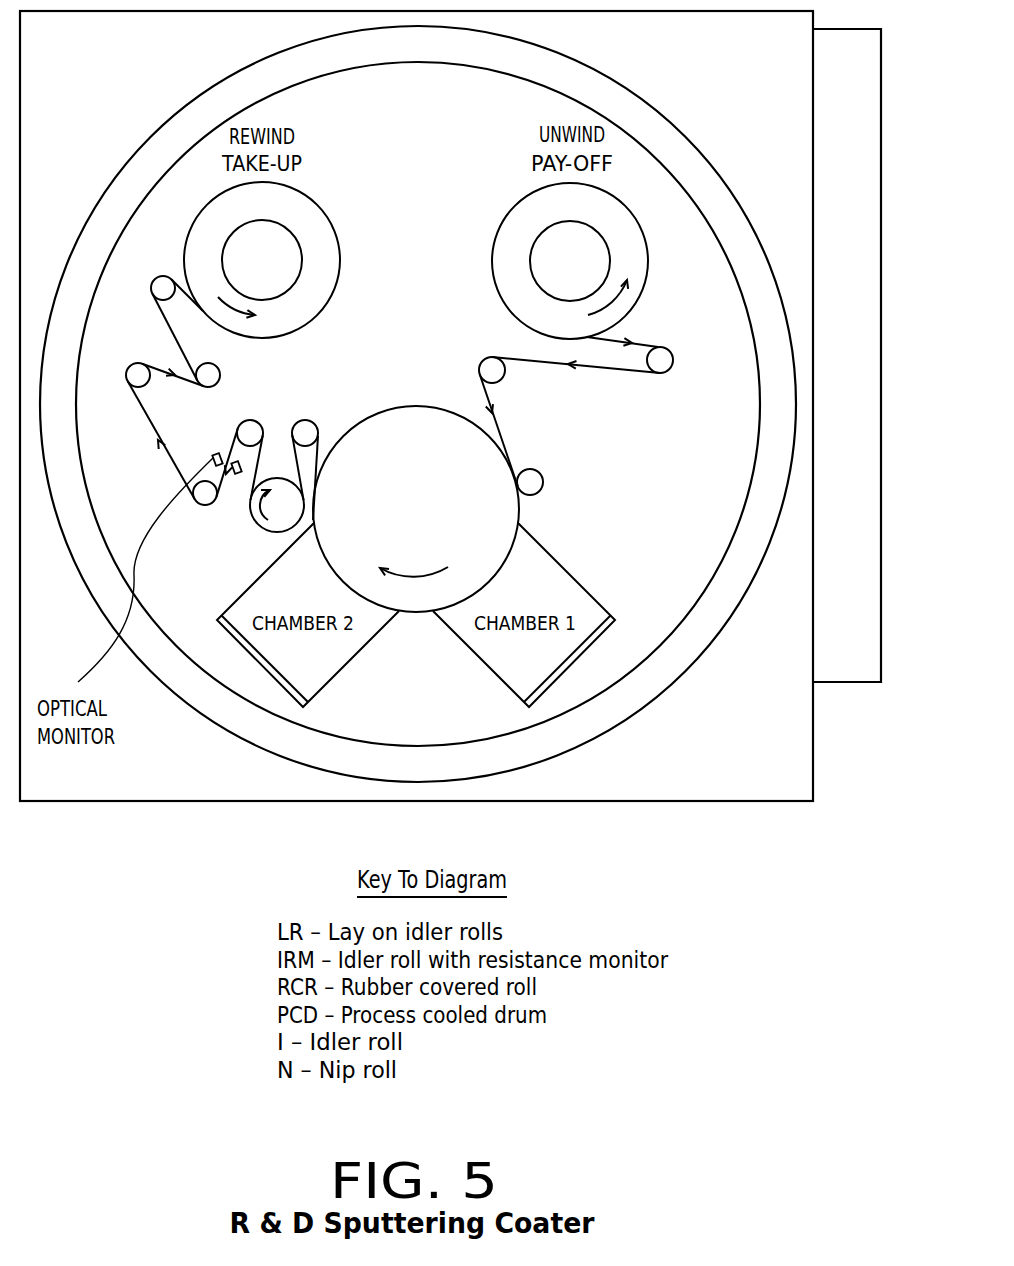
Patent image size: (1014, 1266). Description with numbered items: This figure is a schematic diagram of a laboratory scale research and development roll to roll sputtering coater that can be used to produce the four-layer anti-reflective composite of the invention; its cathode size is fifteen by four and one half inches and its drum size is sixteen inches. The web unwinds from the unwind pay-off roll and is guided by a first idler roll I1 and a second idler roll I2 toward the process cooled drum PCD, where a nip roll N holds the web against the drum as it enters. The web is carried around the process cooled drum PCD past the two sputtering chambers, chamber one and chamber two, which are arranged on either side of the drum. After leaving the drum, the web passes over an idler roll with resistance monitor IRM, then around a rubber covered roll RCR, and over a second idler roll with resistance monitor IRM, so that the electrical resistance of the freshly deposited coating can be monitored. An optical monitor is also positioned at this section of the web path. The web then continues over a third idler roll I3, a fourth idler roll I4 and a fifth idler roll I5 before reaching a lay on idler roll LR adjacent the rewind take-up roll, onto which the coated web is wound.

The lay on idler roll LR is at (153, 275).
The idler roll with resistance monitor IRM is at (277, 419).
The rubber covered roll RCR is at (270, 519).
The process cooled drum PCD is at (416, 509).
The idler roll I1 is at (668, 347).
The idler roll I2 is at (474, 363).
The idler roll I3 is at (200, 509).
The idler roll I4 is at (121, 375).
The idler roll I5 is at (222, 371).
The nip roll N is at (544, 482).